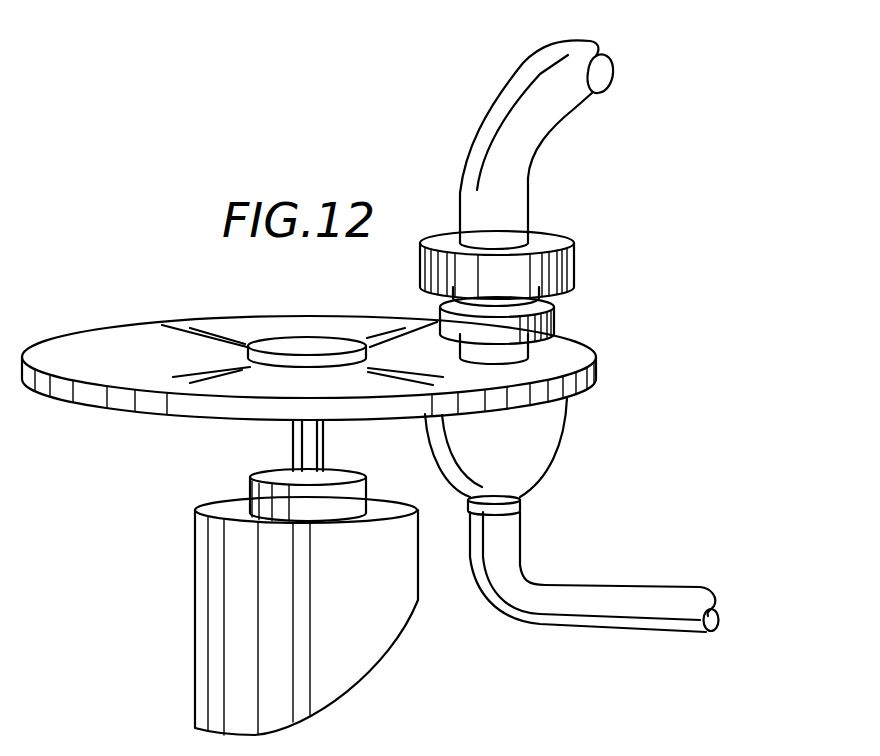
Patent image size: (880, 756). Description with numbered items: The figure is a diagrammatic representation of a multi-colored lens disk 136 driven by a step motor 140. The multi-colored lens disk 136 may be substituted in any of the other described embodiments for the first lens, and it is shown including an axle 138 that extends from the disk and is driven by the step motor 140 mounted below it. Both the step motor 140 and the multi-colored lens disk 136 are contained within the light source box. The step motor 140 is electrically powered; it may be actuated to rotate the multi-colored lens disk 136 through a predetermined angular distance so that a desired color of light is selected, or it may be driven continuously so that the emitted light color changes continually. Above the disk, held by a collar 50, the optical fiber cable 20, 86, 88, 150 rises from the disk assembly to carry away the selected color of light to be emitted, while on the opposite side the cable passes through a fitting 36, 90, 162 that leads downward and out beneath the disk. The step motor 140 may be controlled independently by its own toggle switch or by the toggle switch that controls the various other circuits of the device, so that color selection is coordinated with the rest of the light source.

The optical fiber cable 20 is at (632, 144).
The optical fiber cable 86 is at (632, 144).
The optical fiber cable 88 is at (632, 144).
The optical fiber cable 150 is at (528, 177).
The collar 50 is at (575, 268).
The multi-colored lens disk 136 is at (585, 353).
The outlet 36 is at (585, 515).
The outlet tube 90 is at (585, 515).
The drain conduit 162 is at (537, 452).
The axle 138 is at (293, 443).
The step motor 140 is at (195, 611).